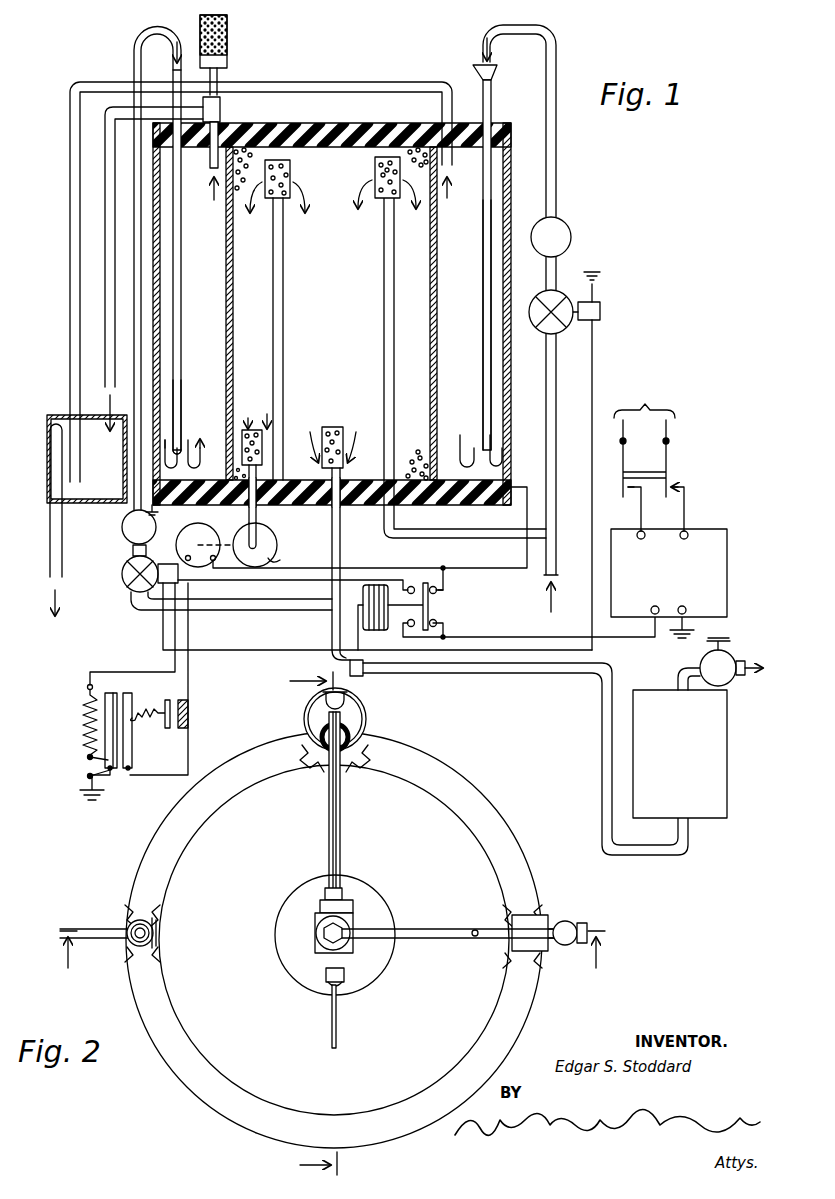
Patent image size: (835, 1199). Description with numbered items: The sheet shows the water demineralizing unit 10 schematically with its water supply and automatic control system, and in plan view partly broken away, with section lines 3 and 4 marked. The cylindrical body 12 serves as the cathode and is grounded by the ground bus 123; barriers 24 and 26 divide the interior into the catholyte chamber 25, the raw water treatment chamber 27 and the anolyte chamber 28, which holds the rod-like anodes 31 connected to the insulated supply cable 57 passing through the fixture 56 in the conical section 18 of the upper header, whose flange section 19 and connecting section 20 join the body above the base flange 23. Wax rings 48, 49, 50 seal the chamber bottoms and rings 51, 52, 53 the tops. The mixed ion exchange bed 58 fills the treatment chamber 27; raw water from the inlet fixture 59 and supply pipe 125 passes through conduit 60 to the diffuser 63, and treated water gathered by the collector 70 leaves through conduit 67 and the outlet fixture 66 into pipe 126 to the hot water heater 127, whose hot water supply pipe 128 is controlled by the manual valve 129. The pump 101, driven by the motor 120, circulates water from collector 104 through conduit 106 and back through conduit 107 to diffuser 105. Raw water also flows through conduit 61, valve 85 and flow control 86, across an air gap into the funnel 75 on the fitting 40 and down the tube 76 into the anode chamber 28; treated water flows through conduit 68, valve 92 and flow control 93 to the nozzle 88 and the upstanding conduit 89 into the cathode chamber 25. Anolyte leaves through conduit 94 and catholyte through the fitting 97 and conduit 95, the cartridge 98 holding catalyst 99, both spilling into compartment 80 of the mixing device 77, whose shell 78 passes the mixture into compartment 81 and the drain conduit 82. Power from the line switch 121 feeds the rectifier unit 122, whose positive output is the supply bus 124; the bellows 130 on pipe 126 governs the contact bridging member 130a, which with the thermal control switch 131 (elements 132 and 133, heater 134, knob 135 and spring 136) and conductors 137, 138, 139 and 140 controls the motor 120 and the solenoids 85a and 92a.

In FIG. 1, the water demineralizing unit 10 is at (356, 47).
In FIG. 1, the upstanding substantially cylindrical body 12 is at (153, 228).
In FIG. 2, the central upwardly directed conical section 18 is at (355, 888).
In FIG. 2, the outwardly directed marginal flange section 19 is at (480, 786).
In FIG. 2, the intermediate downwardly directed connecting section 20 is at (470, 858).
In FIG. 2, the inwardly directed marginal flange 23 is at (512, 958).
In FIG. 1, the barrier 24 is at (226, 240).
In FIG. 1, the catholyte chamber 25 is at (212, 289).
In FIG. 1, the second barrier 26 is at (440, 260).
In FIG. 1, the raw water treatment chamber 27 is at (338, 289).
In FIG. 1, the anolyte chamber 28 is at (468, 289).
In FIG. 1, the rod-like conducting elements 31 is at (511, 180).
In FIG. 2, the section line 3 is at (332, 958).
In FIG. 2, the section line 4 is at (304, 924).
In FIG. 2, the fitting 40 is at (318, 948).
In FIG. 1, the layer of insulating material 48 is at (192, 472).
In FIG. 1, the layer of insulating material 49 is at (305, 480).
In FIG. 1, the layer of insulating material 50 is at (448, 480).
In FIG. 1, the layer of insulating material 51 is at (218, 120).
In FIG. 1, the layer of insulating material 52 is at (312, 123).
In FIG. 1, the layer of insulating material 53 is at (483, 112).
In FIG. 2, the fixture 56 is at (326, 976).
In FIG. 1, the power supply cable insulation 57 is at (512, 565).
In FIG. 2, the power supply cable insulation 57 is at (336, 1034).
In FIG. 1, the porous bed 58 is at (414, 455).
In FIG. 1, the raw water inlet fixture 59 is at (556, 538).
In FIG. 1, the insulating conduit 60 is at (462, 538).
In FIG. 1, the insulating conduit 61 is at (557, 62).
In FIG. 2, the insulating conduit 61 is at (410, 932).
In FIG. 1, the perforated diffuser 63 is at (375, 170).
In FIG. 1, the treated water outlet fixture 66 is at (228, 622).
In FIG. 1, the insulating conduit 67 is at (340, 552).
In FIG. 1, the insulating conduit 68 is at (134, 48).
In FIG. 2, the insulating conduit 68 is at (110, 928).
In FIG. 1, the perforated collector 70 is at (338, 420).
In FIG. 1, the threaded funnel 75 is at (497, 72).
In FIG. 2, the threaded funnel 75 is at (336, 950).
In FIG. 1, the insulating tube 76 is at (483, 352).
In FIG. 1, the mixing device 77 is at (47, 438).
In FIG. 2, the tubular shell 78 is at (366, 715).
In FIG. 1, the compartment 80 is at (118, 468).
In FIG. 2, the compartment 80 is at (310, 716).
In FIG. 2, the compartment 81 is at (340, 698).
In FIG. 1, the drain conduit 82 is at (50, 570).
In FIG. 1, the solenoid operated valve 85 is at (540, 330).
In FIG. 1, the operating solenoid 85a is at (600, 312).
In FIG. 1, the flow control device 86 is at (551, 237).
In FIG. 2, the flow control device 86 is at (565, 922).
In FIG. 1, the nozzle 88 is at (173, 50).
In FIG. 1, the upstanding insulating conduit 89 is at (182, 392).
In FIG. 2, the upstanding insulating conduit 89 is at (156, 944).
In FIG. 1, the solenoid operated valve 92 is at (122, 575).
In FIG. 1, the operating solenoid 92a is at (133, 550).
In FIG. 1, the flow control device 93 is at (139, 527).
In FIG. 1, the insulating conduit 94 is at (352, 82).
In FIG. 2, the insulating conduit 94 is at (329, 828).
In FIG. 1, the insulating conduit 95 is at (107, 145).
In FIG. 1, the fitting 97 is at (220, 100).
In FIG. 1, the insulating cartridge 98 is at (227, 46).
In FIG. 1, the catalytic material 99 is at (227, 22).
In FIG. 1, the water pump 101 is at (278, 560).
In FIG. 1, the perforated collector 104 is at (250, 425).
In FIG. 1, the perforated diffuser 105 is at (284, 200).
In FIG. 1, the conduit 106 is at (249, 514).
In FIG. 1, the conduit 107 is at (277, 520).
In FIG. 1, the electric drive motor 120 is at (215, 545).
In FIG. 1, the line switch 121 is at (670, 468).
In FIG. 1, the rectifier unit 122 is at (669, 553).
In FIG. 1, the ground bus 123 is at (694, 636).
In FIG. 1, the supply bus 124 is at (483, 638).
In FIG. 1, the raw water supply pipe 125 is at (571, 587).
In FIG. 1, the pipe 126 is at (528, 676).
In FIG. 1, the home hot water heater 127 is at (680, 754).
In FIG. 1, the hot water supply pipe 128 is at (672, 670).
In FIG. 1, the manually operable valve 129 is at (731, 662).
In FIG. 1, the pressure controlled bellows 130 is at (370, 634).
In FIG. 1, the contact bridging member 130a is at (432, 604).
In FIG. 1, the control switch 131 is at (165, 691).
In FIG. 1, the contact carrying element 132 is at (128, 765).
In FIG. 1, the contact carrying element 133 is at (85, 766).
In FIG. 1, the heater 134 is at (85, 712).
In FIG. 1, the control knob 135 is at (188, 700).
In FIG. 1, the biasing spring 136 is at (140, 718).
In FIG. 1, the conductor 137 is at (245, 580).
In FIG. 1, the conductor 138 is at (188, 740).
In FIG. 1, the conductor 139 is at (88, 778).
In FIG. 1, the conductor 140 is at (234, 650).